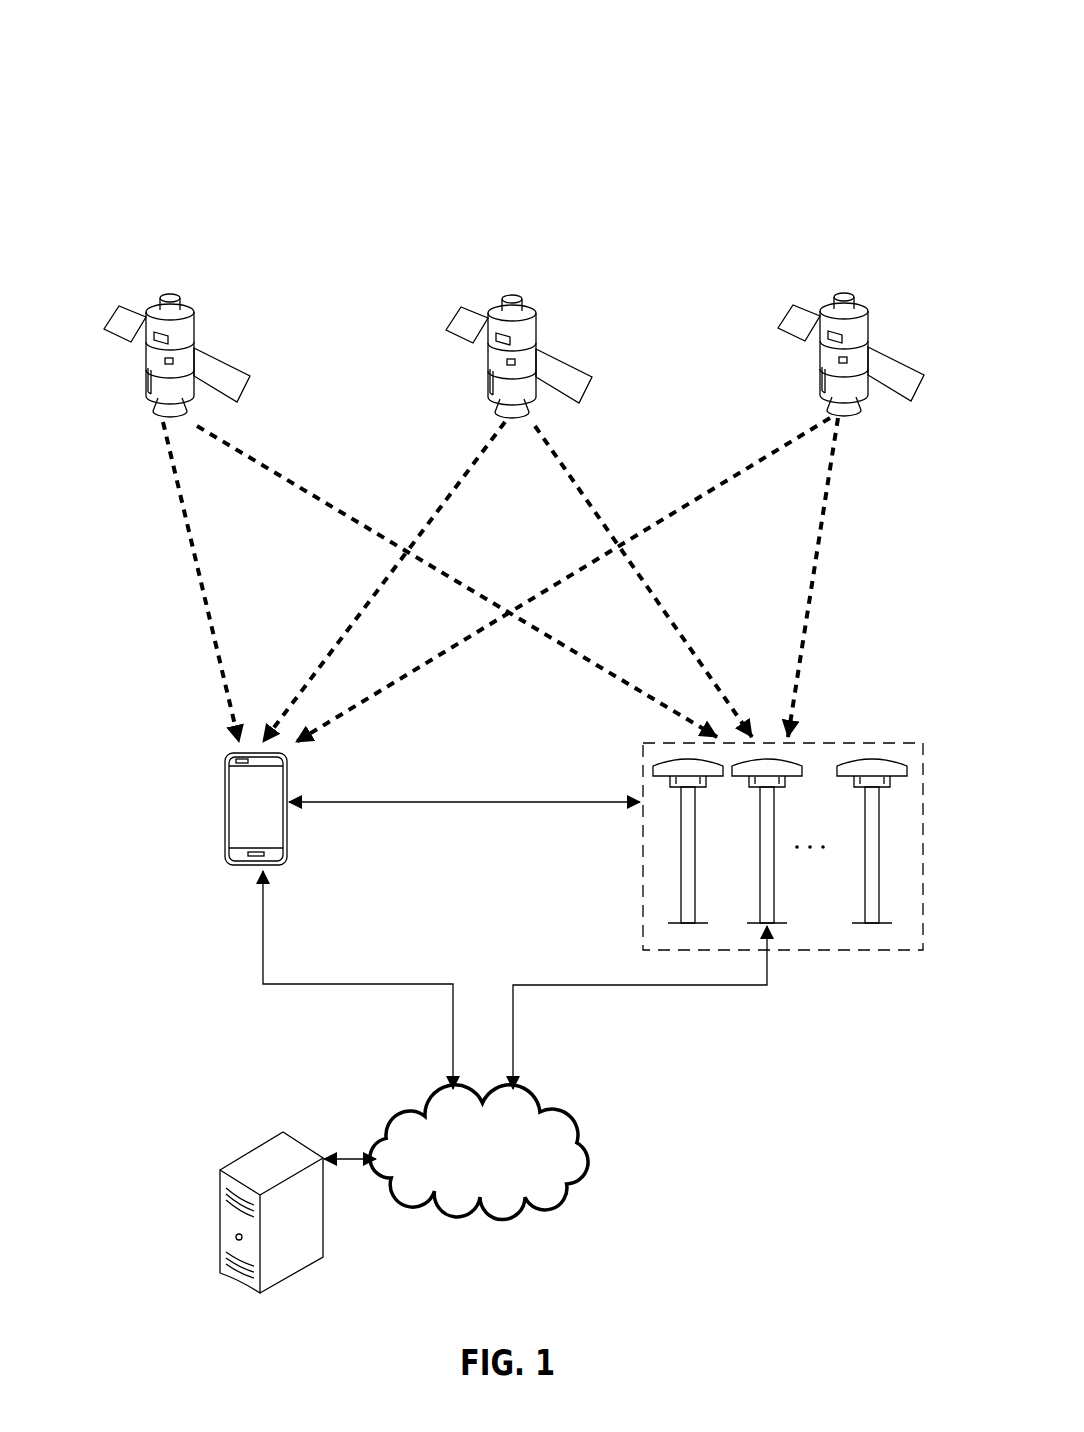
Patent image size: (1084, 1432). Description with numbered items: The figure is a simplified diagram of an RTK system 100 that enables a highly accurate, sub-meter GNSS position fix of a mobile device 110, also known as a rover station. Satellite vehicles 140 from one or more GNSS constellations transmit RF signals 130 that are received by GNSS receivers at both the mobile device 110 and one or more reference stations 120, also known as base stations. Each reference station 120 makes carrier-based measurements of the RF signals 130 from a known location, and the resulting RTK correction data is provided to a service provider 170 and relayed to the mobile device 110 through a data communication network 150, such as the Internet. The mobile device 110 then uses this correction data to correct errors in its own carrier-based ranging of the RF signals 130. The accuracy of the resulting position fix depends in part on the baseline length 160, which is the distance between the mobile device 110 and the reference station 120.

The RTK system 100 is at (745, 58).
The mobile device 110 is at (233, 782).
The reference station 120 is at (820, 743).
The RF signals 130 is at (446, 508).
The satellite vehicle 140 is at (905, 294).
The data communication network 150 is at (587, 1165).
The baseline length 160 is at (350, 800).
The service provider 170 is at (272, 1167).